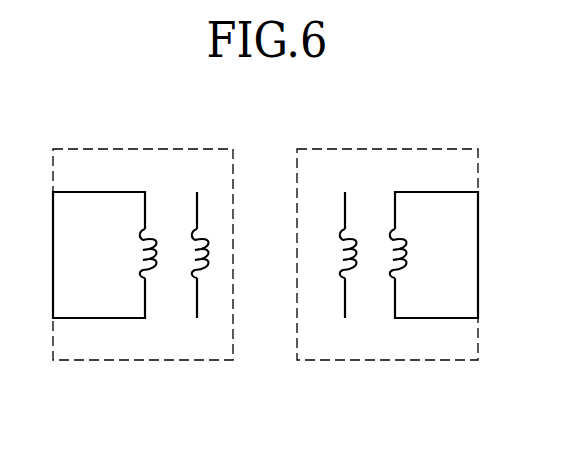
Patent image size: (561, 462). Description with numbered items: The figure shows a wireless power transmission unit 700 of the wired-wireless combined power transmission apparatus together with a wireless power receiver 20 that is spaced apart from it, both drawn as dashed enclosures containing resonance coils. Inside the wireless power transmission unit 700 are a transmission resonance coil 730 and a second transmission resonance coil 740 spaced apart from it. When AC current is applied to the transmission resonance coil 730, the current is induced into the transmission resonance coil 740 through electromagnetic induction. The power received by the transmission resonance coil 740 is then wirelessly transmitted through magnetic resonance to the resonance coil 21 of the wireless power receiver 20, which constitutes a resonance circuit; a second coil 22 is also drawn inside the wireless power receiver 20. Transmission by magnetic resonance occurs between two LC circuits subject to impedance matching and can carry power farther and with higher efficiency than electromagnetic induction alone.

The wireless power transmission unit 700 is at (145, 148).
The transmission resonance coil 730 is at (145, 306).
The transmission resonance coil 740 is at (197, 306).
The wireless power receiver 20 is at (391, 148).
The resonance coil 21 is at (345, 306).
The receiving coil 22 is at (395, 306).